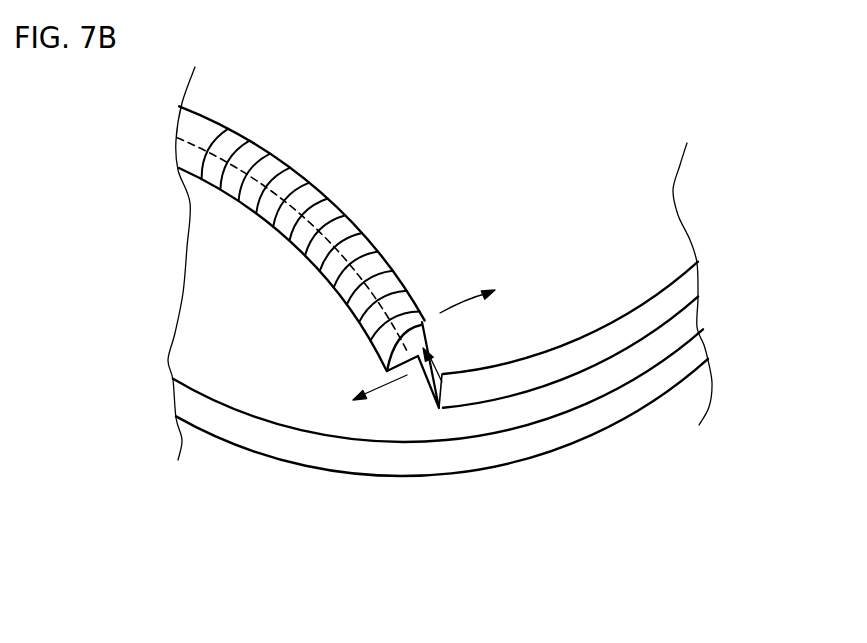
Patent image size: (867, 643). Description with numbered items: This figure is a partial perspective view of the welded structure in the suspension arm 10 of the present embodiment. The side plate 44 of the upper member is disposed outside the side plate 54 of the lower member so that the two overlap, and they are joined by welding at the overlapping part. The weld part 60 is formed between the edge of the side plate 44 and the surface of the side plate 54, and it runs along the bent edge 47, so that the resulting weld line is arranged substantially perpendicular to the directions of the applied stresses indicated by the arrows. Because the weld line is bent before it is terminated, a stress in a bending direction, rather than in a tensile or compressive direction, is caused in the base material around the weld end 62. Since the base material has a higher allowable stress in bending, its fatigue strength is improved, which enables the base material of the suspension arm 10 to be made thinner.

The suspension arm 10 is at (461, 329).
The side plate 44 is at (647, 202).
The bent edge 47 is at (312, 238).
The side plate 54 is at (278, 407).
The weld part 60 is at (375, 270).
The weld end 62 is at (442, 382).